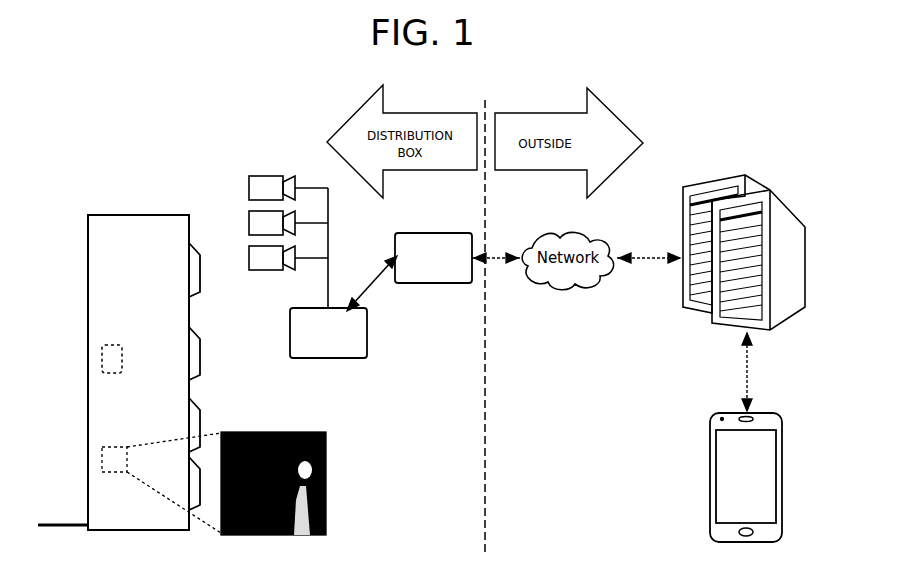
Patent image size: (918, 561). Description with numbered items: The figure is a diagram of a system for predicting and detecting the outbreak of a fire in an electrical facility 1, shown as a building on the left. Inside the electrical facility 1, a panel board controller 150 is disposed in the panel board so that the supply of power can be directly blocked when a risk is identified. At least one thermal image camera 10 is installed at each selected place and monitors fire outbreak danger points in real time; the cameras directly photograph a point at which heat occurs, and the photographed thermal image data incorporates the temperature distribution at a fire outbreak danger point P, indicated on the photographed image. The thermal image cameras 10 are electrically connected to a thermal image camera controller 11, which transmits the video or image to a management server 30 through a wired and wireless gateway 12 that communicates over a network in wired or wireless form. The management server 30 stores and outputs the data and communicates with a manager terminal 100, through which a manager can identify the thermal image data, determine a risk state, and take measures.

The electrical facility 1 is at (134, 214).
The thermal image camera 10 is at (266, 176).
The thermal image camera controller 11 is at (350, 358).
The wired and wireless gateway 12 is at (425, 283).
The management server 30 is at (735, 176).
The manager terminal 100 is at (768, 412).
The panel board controller 150 is at (106, 358).
The fire outbreak (danger) point P is at (327, 466).